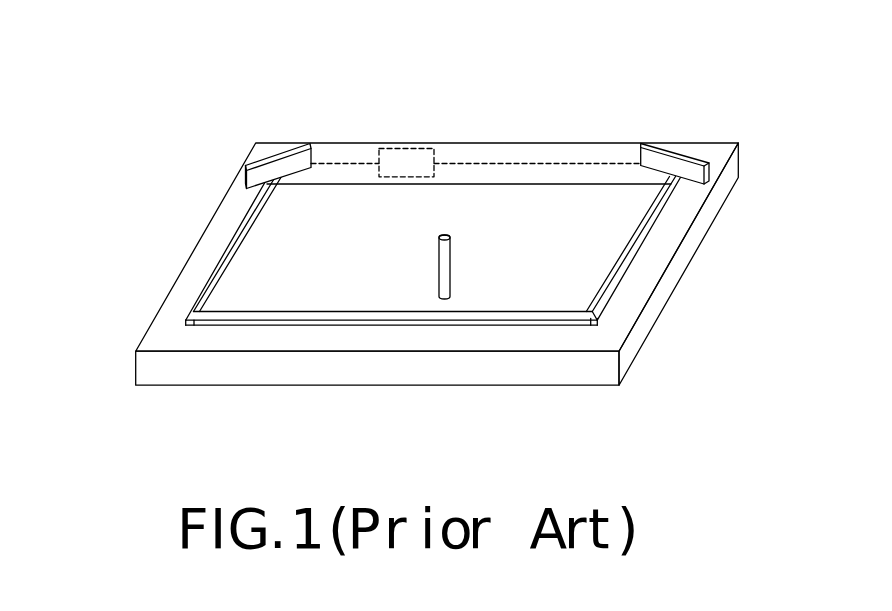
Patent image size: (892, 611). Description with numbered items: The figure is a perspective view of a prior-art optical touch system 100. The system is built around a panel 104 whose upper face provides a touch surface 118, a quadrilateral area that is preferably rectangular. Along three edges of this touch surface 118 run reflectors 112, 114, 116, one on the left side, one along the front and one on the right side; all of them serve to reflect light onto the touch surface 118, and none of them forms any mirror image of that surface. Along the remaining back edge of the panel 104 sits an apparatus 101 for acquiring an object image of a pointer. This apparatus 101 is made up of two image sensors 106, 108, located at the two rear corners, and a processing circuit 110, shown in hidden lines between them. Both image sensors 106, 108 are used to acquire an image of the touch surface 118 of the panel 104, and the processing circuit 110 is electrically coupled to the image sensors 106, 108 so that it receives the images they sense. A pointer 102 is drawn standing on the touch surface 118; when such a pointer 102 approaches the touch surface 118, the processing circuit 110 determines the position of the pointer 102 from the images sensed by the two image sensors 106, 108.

The optical touch system 100 is at (435, 239).
The apparatus for acquiring an object image of a pointer 101 is at (478, 101).
The pointer 102 is at (452, 268).
The panel 104 is at (655, 267).
The image sensor 106 is at (277, 158).
The image sensor 108 is at (652, 145).
The processing circuit 110 is at (406, 146).
The reflector 112 is at (240, 243).
The reflector 114 is at (327, 317).
The reflector 116 is at (653, 218).
The touch surface 118 is at (547, 297).